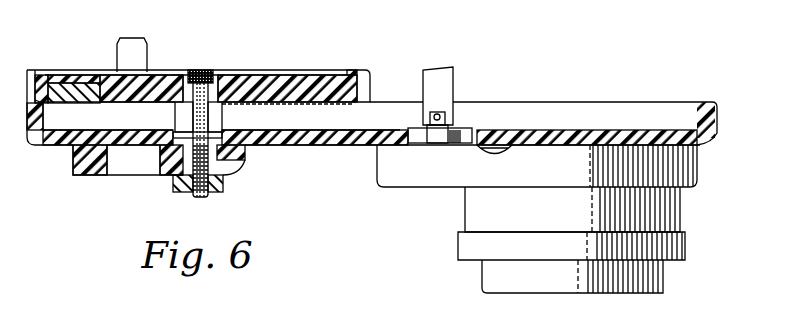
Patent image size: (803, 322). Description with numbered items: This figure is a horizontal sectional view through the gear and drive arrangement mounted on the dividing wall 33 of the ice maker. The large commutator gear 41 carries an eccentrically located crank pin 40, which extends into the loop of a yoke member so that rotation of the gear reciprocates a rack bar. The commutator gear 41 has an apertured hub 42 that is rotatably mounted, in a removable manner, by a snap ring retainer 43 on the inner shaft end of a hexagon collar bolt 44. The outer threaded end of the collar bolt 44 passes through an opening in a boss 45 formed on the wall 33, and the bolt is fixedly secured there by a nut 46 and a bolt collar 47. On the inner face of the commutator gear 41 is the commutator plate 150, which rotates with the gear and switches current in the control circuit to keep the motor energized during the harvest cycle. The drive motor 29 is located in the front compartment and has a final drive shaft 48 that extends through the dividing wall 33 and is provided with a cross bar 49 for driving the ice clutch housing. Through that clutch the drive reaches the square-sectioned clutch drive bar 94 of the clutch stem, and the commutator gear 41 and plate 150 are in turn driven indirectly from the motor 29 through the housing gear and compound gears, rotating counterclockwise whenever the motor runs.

The drive motor 29 is at (688, 220).
The wall 33 is at (310, 140).
The crank pin 40 is at (122, 60).
The commutator gear 41 is at (334, 86).
The apertured hub 42 is at (222, 118).
The snap ring retainer 43 is at (182, 76).
The hexagon collar bolt 44 is at (211, 78).
The boss 45 is at (226, 148).
The nut 46 is at (214, 195).
The bolt collar 47 is at (168, 148).
The final drive shaft 48 is at (446, 127).
The cross bar 49 is at (432, 121).
The clutch drive bar 94 is at (442, 78).
The commutator plate 150 is at (270, 106).